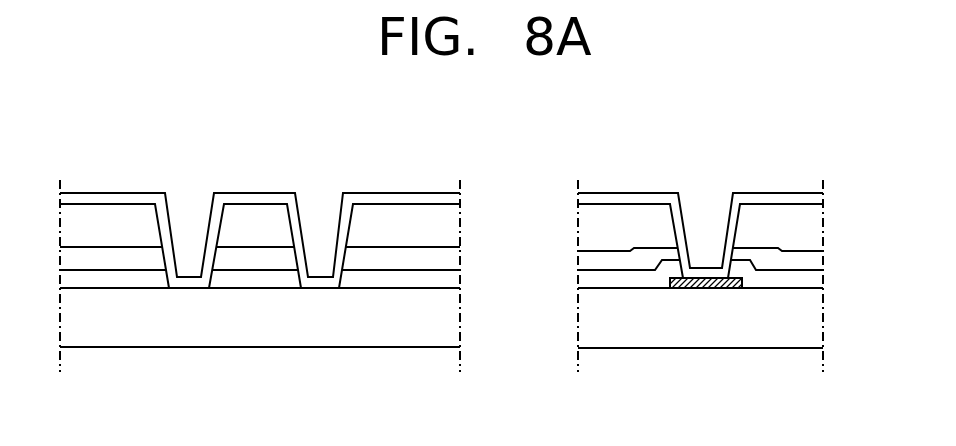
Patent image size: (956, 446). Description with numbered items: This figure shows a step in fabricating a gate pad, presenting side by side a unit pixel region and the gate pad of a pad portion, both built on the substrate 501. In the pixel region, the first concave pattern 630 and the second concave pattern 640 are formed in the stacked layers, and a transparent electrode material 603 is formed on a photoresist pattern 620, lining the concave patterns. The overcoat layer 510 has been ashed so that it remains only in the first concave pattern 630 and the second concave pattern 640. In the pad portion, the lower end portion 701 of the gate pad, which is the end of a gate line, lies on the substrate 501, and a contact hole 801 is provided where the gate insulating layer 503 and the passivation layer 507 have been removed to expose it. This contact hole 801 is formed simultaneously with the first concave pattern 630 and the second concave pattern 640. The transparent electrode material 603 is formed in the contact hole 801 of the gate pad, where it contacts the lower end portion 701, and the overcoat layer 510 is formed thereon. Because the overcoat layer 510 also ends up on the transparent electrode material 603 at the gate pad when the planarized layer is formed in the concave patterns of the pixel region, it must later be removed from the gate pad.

The substrate 501 is at (587, 330).
The gate insulating layer 503 is at (460, 279).
The passivation layer 507 is at (460, 258).
The overcoat layer 510 is at (317, 265).
The transparent electrode material 603 is at (460, 196).
The photoresist pattern 620 is at (460, 231).
The first concave pattern 630 is at (194, 190).
The second concave pattern 640 is at (323, 190).
The lower end portion of the gate pad 701 is at (718, 288).
The contact hole 801 is at (708, 193).